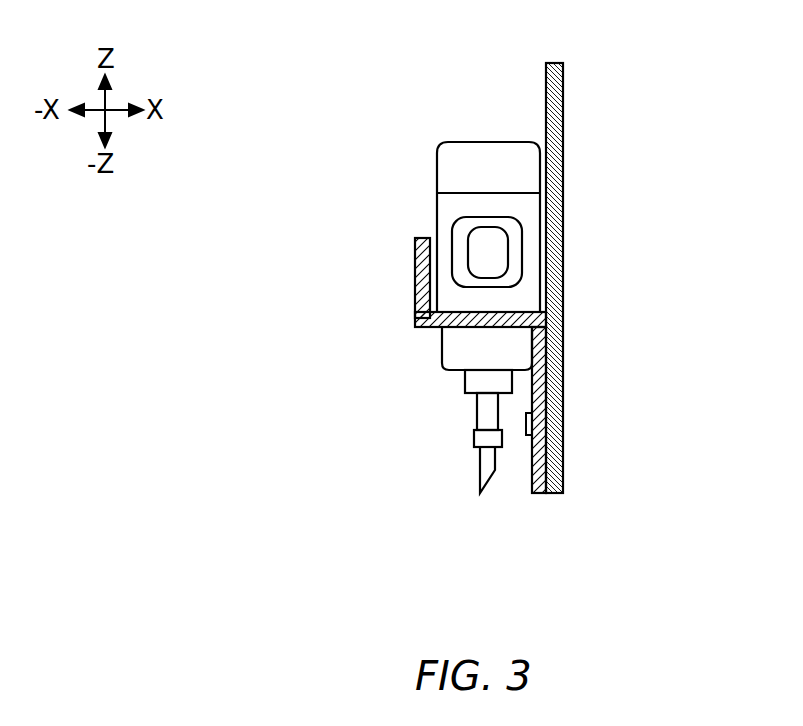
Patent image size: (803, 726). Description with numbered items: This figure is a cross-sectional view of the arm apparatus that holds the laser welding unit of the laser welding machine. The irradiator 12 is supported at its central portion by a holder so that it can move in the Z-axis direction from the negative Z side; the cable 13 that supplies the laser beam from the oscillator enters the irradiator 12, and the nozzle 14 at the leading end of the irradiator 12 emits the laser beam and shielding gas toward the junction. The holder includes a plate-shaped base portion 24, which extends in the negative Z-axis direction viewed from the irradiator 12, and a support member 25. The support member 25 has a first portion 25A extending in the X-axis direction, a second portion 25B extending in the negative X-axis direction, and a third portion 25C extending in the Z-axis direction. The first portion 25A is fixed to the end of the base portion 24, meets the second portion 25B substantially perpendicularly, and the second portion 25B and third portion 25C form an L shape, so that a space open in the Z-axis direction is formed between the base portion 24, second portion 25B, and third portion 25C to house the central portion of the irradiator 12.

The irradiator 12 is at (480, 142).
The cable 13 is at (475, 253).
The nozzle 14 is at (486, 472).
The base portion 24 is at (562, 229).
The support member 25 is at (414, 411).
The first portion 25A is at (532, 493).
The second portion 25B is at (427, 328).
The third portion 25C is at (415, 262).